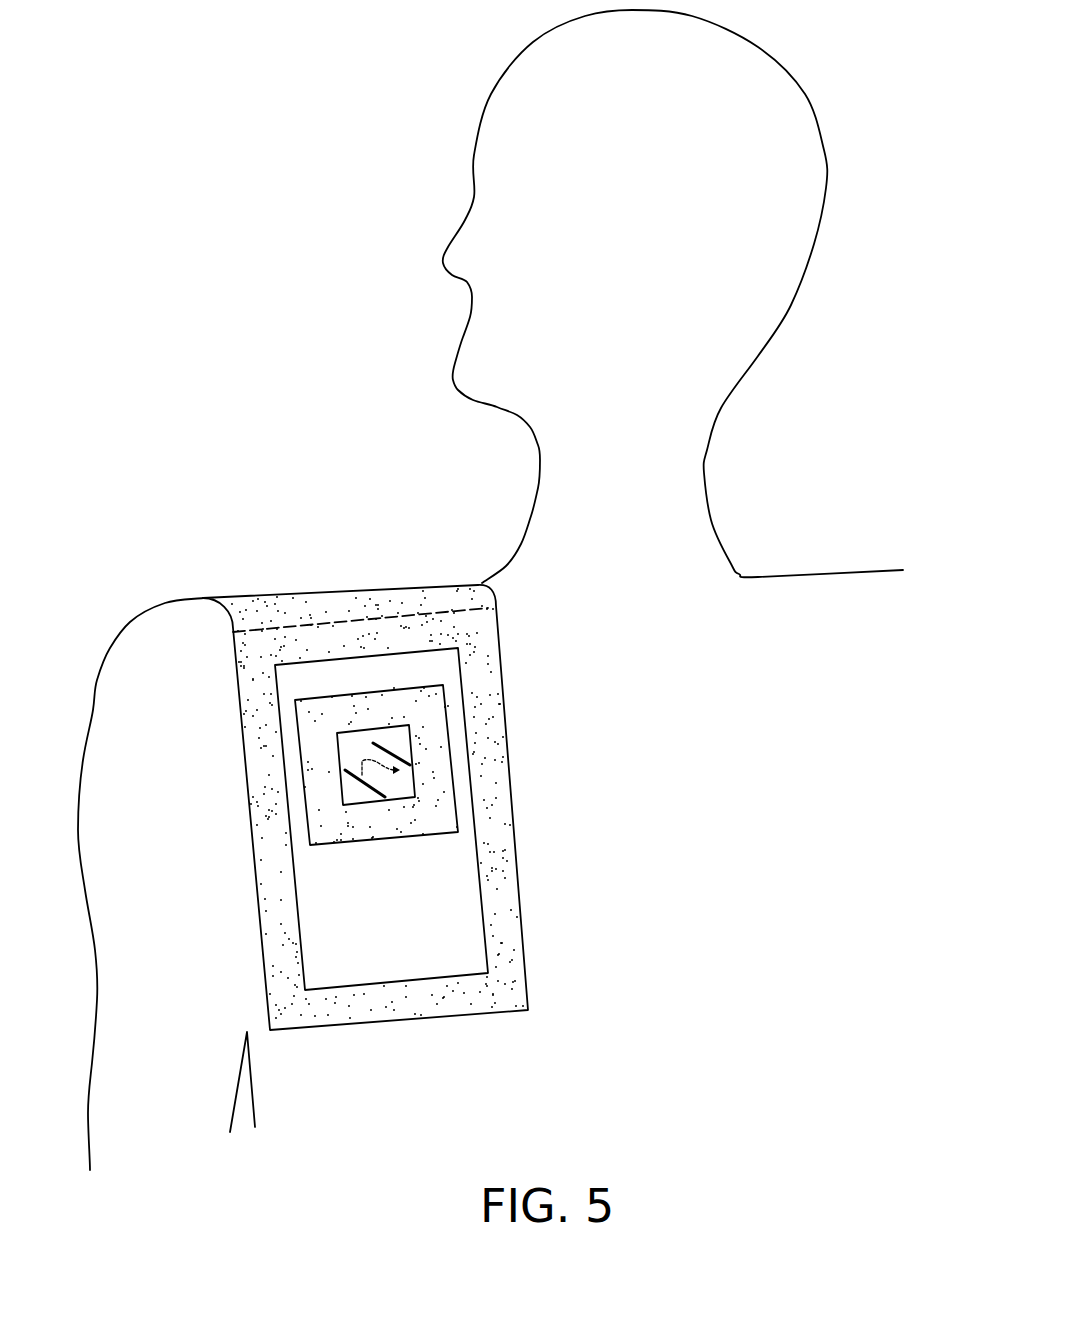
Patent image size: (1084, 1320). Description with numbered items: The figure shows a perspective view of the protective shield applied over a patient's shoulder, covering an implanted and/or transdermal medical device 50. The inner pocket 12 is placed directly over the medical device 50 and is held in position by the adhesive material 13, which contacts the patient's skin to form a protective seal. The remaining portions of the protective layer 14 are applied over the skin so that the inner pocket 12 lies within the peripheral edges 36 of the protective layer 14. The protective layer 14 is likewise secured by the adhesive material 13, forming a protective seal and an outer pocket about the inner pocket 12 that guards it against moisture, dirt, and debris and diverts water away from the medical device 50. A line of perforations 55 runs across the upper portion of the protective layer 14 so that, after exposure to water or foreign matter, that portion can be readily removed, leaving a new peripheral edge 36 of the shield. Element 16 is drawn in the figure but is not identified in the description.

The protective layer 14 is at (393, 769).
The line of perforations 55 is at (305, 625).
The inner pocket 12 is at (397, 738).
The peripheral edges 36 is at (512, 755).
The implanted and/or transdermal medical device 50 is at (397, 770).
The adhesive material 13 is at (320, 807).
The absorbent pad area 16 is at (400, 907).